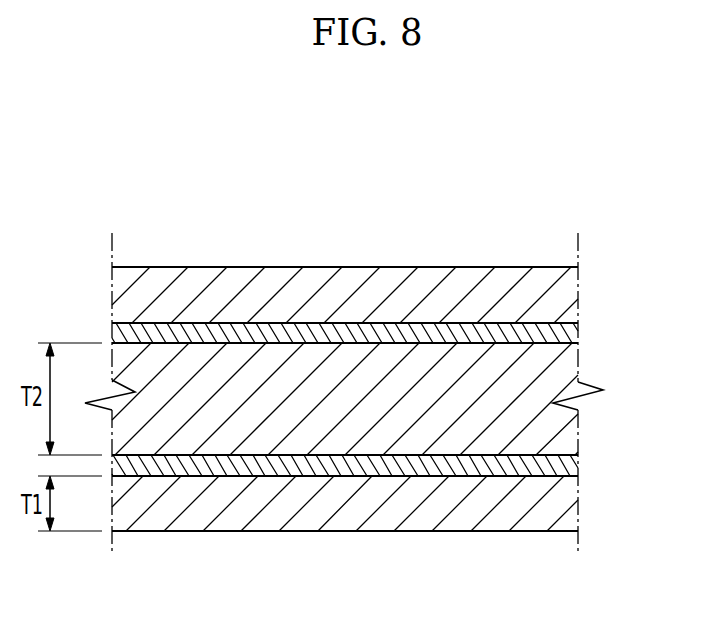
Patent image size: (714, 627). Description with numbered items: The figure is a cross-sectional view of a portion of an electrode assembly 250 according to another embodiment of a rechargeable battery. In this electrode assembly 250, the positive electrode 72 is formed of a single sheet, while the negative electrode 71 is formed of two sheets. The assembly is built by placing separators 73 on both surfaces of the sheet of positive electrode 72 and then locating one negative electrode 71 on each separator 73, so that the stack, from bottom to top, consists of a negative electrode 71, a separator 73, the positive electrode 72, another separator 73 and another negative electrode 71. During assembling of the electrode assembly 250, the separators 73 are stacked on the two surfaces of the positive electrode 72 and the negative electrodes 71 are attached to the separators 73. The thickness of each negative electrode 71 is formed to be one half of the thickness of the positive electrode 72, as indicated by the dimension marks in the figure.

The electrode assembly 250 is at (527, 193).
The negative electrode 71 is at (212, 497).
The positive electrode 72 is at (437, 410).
The separator 73 is at (317, 467).